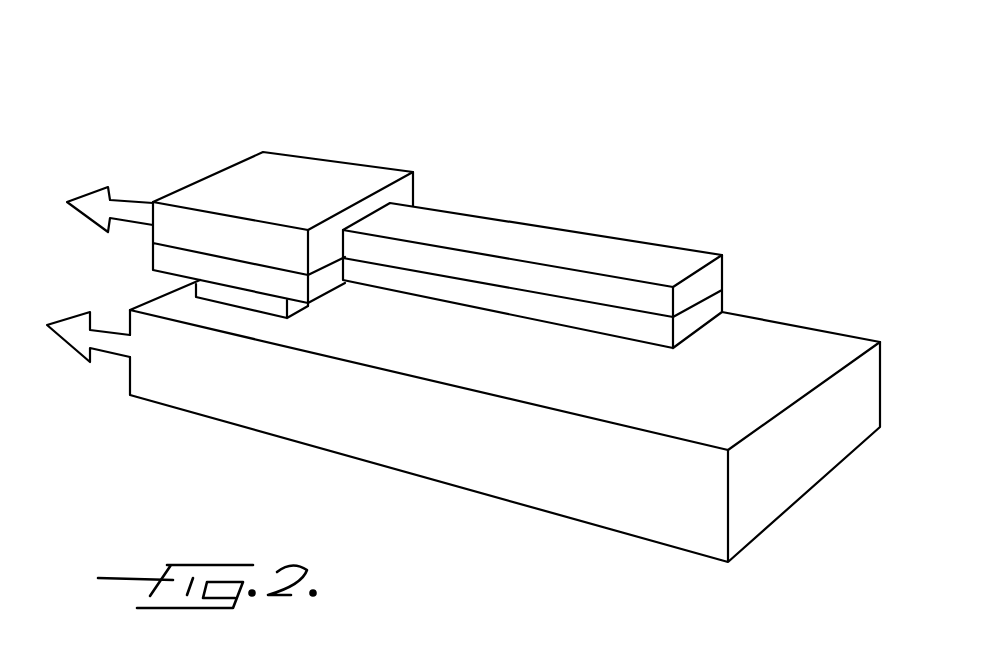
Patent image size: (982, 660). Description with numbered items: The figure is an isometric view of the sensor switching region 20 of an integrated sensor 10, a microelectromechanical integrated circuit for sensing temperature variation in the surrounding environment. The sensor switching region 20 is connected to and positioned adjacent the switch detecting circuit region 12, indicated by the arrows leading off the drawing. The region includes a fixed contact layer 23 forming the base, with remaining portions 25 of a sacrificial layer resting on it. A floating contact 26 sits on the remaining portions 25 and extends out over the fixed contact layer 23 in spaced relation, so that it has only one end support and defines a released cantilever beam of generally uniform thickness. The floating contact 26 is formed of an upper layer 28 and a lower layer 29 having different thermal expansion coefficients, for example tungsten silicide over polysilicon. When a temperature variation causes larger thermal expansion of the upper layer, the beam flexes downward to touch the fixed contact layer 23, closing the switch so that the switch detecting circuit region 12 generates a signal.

The integrated sensor 10 is at (232, 115).
The switch detecting circuit region 12 is at (94, 263).
The sensor switching region 20 is at (622, 205).
The fixed contact layer 23 is at (512, 458).
The remaining portions of the sacrificial layer 25 is at (200, 284).
The floating contact 26 is at (727, 317).
The upper layer 28 is at (587, 318).
The lower layer 29 is at (492, 228).